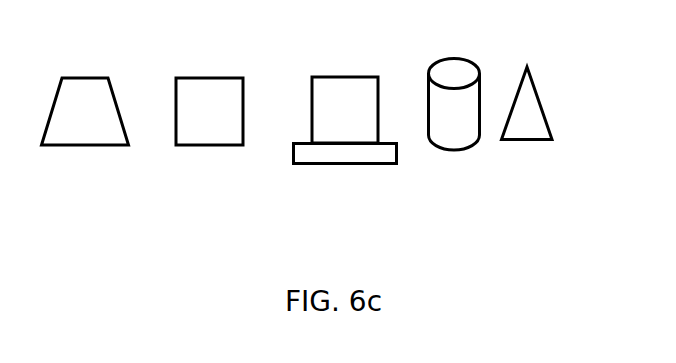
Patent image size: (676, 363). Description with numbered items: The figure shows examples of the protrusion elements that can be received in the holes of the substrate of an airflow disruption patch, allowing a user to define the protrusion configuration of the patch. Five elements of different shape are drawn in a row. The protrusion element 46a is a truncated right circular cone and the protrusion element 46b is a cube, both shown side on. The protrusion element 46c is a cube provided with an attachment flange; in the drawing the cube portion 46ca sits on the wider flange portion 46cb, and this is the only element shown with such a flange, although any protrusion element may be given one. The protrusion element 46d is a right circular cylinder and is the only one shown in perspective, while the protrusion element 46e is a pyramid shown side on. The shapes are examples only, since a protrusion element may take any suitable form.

The protrusion element 46a is at (112, 147).
The protrusion element 46b is at (212, 147).
The protrusion element 46c is at (365, 135).
The upper square portion of composite marker 46ca is at (358, 88).
The base bar portion of composite marker 46cb is at (310, 155).
The protrusion element 46d is at (452, 151).
The protrusion element 46e is at (530, 141).